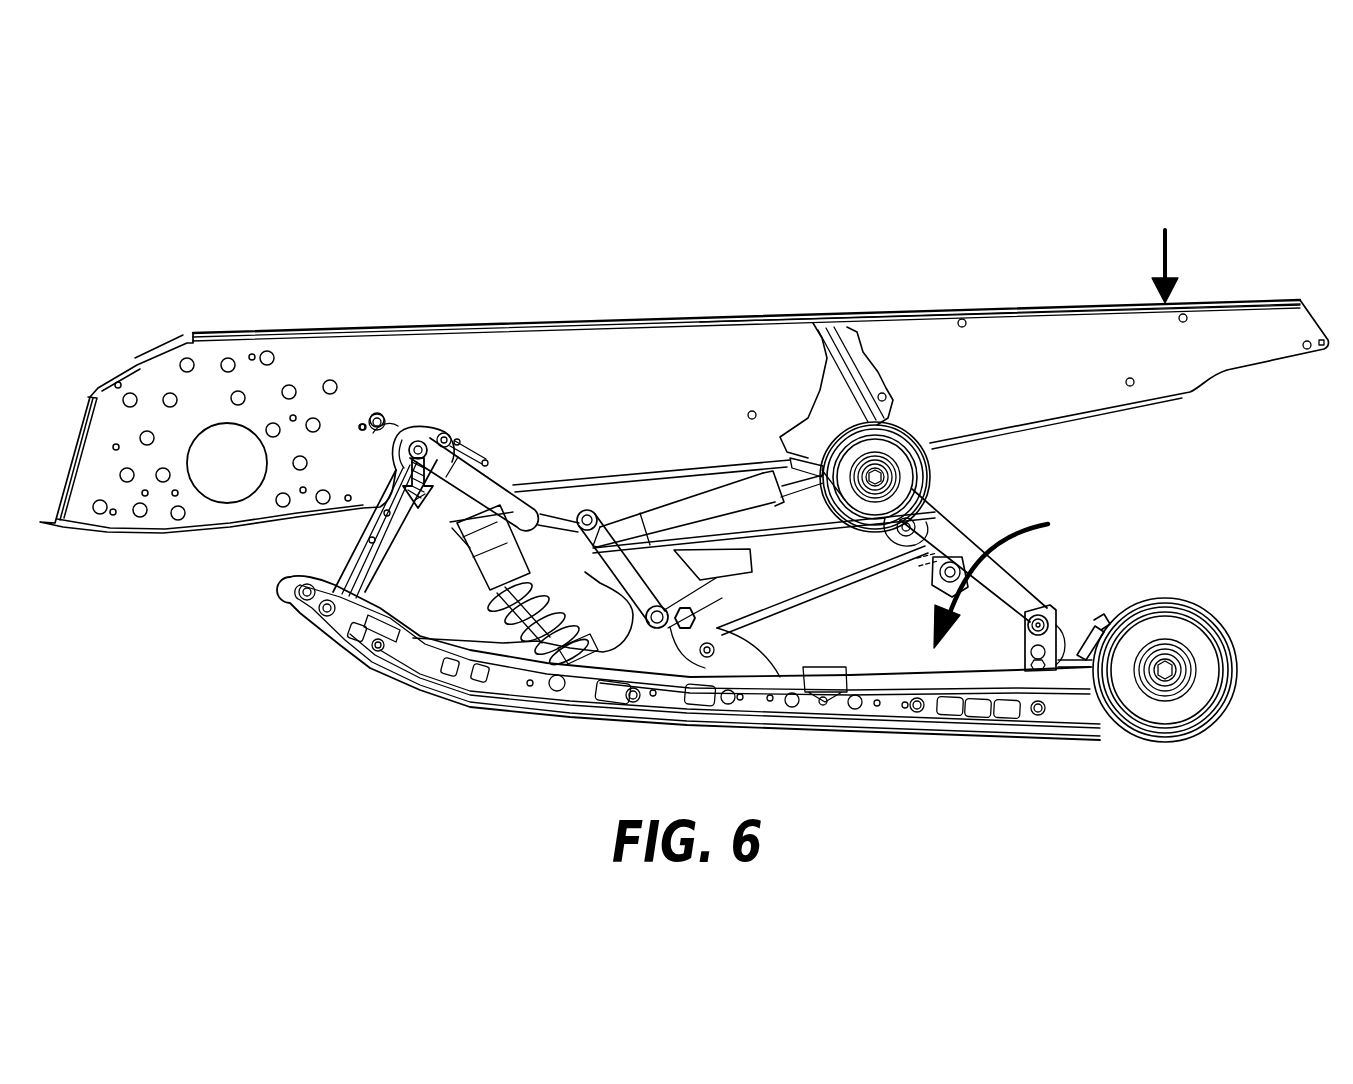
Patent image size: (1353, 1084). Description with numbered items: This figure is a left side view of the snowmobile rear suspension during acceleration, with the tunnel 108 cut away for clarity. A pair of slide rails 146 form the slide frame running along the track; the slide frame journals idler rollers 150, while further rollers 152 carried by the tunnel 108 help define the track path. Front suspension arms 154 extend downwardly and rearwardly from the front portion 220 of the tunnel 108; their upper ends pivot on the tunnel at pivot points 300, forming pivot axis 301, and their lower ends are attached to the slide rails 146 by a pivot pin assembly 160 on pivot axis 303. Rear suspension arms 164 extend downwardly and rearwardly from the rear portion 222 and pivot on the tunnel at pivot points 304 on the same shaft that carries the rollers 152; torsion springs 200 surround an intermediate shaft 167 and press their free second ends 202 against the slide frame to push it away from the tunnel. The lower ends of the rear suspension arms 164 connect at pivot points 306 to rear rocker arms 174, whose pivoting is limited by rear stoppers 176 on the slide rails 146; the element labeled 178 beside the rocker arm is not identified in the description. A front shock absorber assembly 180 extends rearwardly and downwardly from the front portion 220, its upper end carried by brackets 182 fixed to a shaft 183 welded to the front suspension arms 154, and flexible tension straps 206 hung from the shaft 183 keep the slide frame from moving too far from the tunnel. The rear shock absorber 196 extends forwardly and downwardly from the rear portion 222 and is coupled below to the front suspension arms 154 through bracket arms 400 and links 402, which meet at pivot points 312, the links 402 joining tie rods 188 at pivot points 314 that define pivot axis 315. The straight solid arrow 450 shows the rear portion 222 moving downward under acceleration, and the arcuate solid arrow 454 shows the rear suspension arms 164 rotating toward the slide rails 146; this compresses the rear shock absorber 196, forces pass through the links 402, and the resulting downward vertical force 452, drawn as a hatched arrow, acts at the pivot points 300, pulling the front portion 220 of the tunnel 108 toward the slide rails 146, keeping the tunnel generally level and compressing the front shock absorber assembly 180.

The tunnel 108 is at (1005, 325).
The slide rails 146 is at (753, 690).
The idler rollers 150 is at (1185, 600).
The rollers 152 is at (935, 475).
The front suspension arms 154 is at (600, 575).
The pivot pin assembly 160 is at (683, 630).
The rear suspension arms 164 is at (957, 540).
The intermediate shaft 167 is at (953, 523).
The rear rocker arms 174 is at (1025, 648).
The rear stoppers 176 is at (1082, 625).
The rear arm pivot 178 is at (1040, 612).
The front shock absorber assembly 180 is at (478, 576).
The brackets 182 is at (420, 440).
The shaft 183 is at (413, 436).
The tie rods 188 is at (782, 527).
The rear shock absorber 196 is at (697, 500).
The torsion springs 200 is at (882, 550).
The free second end 202 is at (800, 593).
The flexible tension straps 206 is at (393, 497).
The front portion 220 is at (272, 332).
The rear portion 222 is at (1110, 325).
The pivot points 300 is at (424, 443).
The pivot axis 301 is at (378, 420).
The pivot axis 303 is at (682, 628).
The pivot points 304 is at (882, 477).
The pivot points 306 is at (455, 447).
The pivot points 312 is at (565, 505).
The pivot points 314 is at (497, 619).
The pivot axis 315 is at (582, 567).
The bracket arms 400 is at (562, 505).
The links 402 is at (470, 553).
The straight solid arrow 450 is at (1168, 250).
The downward vertical forces 452 is at (423, 505).
The arcuate solid arrow 454 is at (1055, 525).